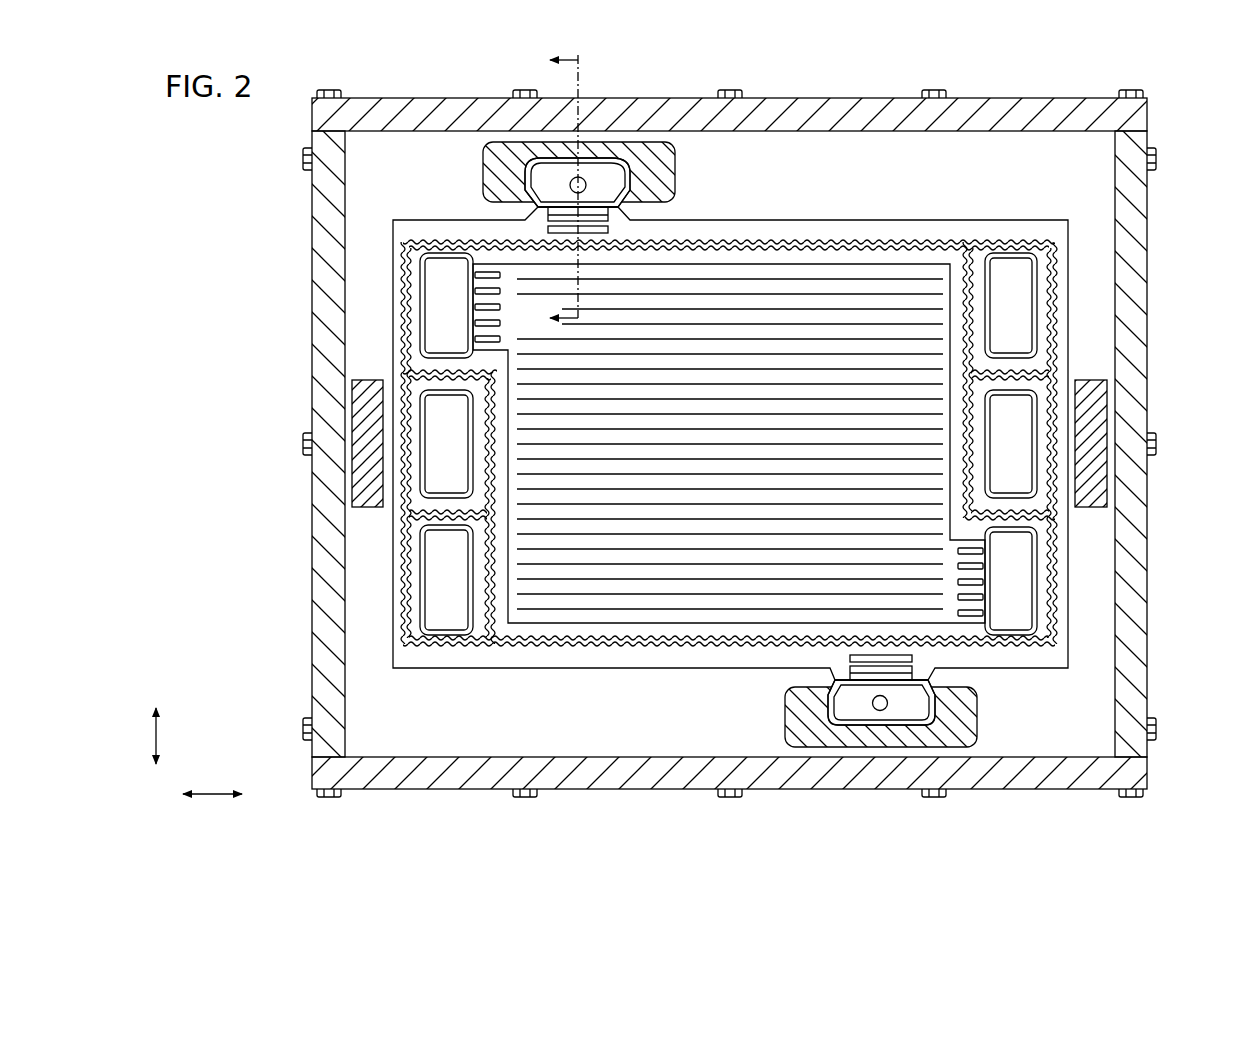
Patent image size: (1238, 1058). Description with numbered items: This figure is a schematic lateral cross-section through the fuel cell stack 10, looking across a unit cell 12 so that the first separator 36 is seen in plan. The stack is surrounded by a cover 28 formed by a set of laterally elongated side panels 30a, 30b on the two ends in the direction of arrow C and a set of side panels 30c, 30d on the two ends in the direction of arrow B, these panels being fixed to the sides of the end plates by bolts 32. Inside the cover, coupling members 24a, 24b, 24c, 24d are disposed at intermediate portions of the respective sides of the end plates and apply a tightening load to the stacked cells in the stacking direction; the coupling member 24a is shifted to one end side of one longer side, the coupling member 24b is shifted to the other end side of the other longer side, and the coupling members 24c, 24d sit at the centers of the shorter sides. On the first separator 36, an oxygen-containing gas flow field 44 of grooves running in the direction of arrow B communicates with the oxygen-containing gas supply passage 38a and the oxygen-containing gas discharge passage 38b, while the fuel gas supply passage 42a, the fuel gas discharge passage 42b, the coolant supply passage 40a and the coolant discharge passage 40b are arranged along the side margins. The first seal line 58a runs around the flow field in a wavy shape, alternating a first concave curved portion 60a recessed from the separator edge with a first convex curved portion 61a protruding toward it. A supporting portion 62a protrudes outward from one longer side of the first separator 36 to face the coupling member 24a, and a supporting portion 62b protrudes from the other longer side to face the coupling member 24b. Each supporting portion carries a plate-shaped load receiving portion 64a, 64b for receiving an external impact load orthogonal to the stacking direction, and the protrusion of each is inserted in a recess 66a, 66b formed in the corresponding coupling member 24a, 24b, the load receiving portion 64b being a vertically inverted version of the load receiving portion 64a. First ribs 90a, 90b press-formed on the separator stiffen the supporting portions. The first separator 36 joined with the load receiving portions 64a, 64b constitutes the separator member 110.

The fuel cell stack 10 is at (232, 135).
The unit cell 12 is at (957, 215).
The coupling member 24a is at (652, 152).
The coupling member 24b is at (805, 735).
The coupling member 24c is at (365, 478).
The coupling member 24d is at (1090, 462).
The cover 28 is at (732, 436).
The side panel 30a is at (1022, 105).
The side panel 30b is at (478, 775).
The side panel 30c is at (322, 614).
The side panel 30d is at (1137, 607).
The bolt 32 is at (329, 90).
The first separator 36 is at (1035, 222).
The oxygen-containing gas supply passage 38a is at (440, 297).
The oxygen-containing gas discharge passage 38b is at (1015, 578).
The coolant supply passage 40a is at (440, 415).
The coolant discharge passage 40b is at (1015, 420).
The fuel gas supply passage 42a is at (1015, 298).
The fuel gas discharge passage 42b is at (440, 585).
The oxygen-containing gas flow field 44 is at (883, 278).
The first seal line 58a is at (729, 397).
The first concave curved portion 60a is at (749, 240).
The first convex curved portion 61a is at (800, 240).
The supporting portion 62a is at (626, 215).
The supporting portion 62b is at (836, 672).
The load receiving portion 64a is at (637, 167).
The load receiving portion 64b is at (945, 715).
The recess 66a is at (528, 178).
The recess 66b is at (836, 716).
The first rib 90a is at (592, 230).
The first rib 90b is at (867, 660).
The separator member 110 is at (1024, 192).